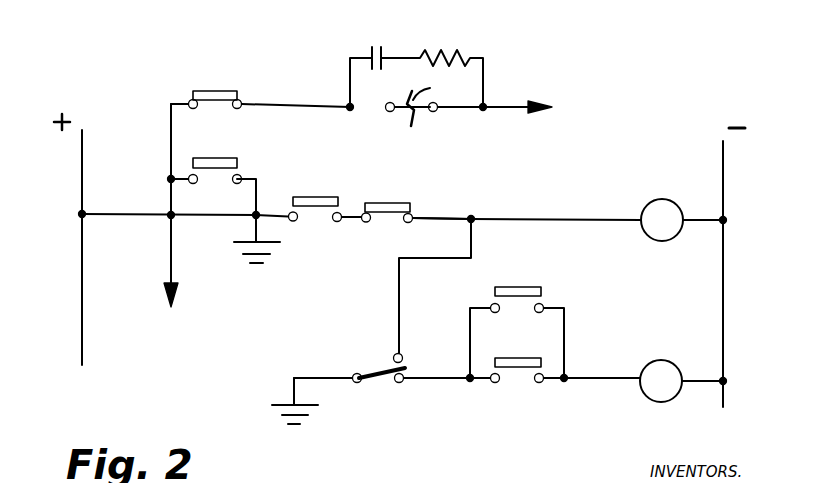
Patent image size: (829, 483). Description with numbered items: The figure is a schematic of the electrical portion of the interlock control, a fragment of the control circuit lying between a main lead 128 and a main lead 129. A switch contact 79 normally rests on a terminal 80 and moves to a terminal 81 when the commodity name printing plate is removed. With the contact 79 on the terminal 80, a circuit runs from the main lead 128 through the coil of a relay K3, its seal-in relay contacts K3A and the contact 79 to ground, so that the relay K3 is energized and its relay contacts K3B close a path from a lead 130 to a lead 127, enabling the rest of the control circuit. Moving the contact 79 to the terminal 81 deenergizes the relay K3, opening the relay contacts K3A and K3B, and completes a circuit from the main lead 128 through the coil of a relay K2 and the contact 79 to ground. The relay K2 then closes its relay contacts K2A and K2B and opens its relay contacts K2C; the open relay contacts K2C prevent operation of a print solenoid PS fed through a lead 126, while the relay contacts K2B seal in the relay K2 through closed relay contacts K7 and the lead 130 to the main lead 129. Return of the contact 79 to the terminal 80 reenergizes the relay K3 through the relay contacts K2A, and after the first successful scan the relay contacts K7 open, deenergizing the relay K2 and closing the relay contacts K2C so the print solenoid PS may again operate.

The contact 79 is at (385, 374).
The terminal 80 is at (402, 386).
The terminal 81 is at (403, 353).
The lead 126 is at (512, 107).
The lead 127 is at (172, 248).
The main lead 128 is at (724, 173).
The main lead 129 is at (82, 165).
The lead 130 is at (440, 219).
The relay K2 is at (662, 220).
The relay K3 is at (661, 381).
The relay contacts K2A is at (517, 362).
The relay contacts K2B is at (315, 200).
The relay contacts K2C is at (215, 91).
The relay contacts K3A is at (517, 291).
The relay contacts K3B is at (215, 161).
The relay contacts K7 is at (387, 204).
The print solenoid PS is at (421, 103).